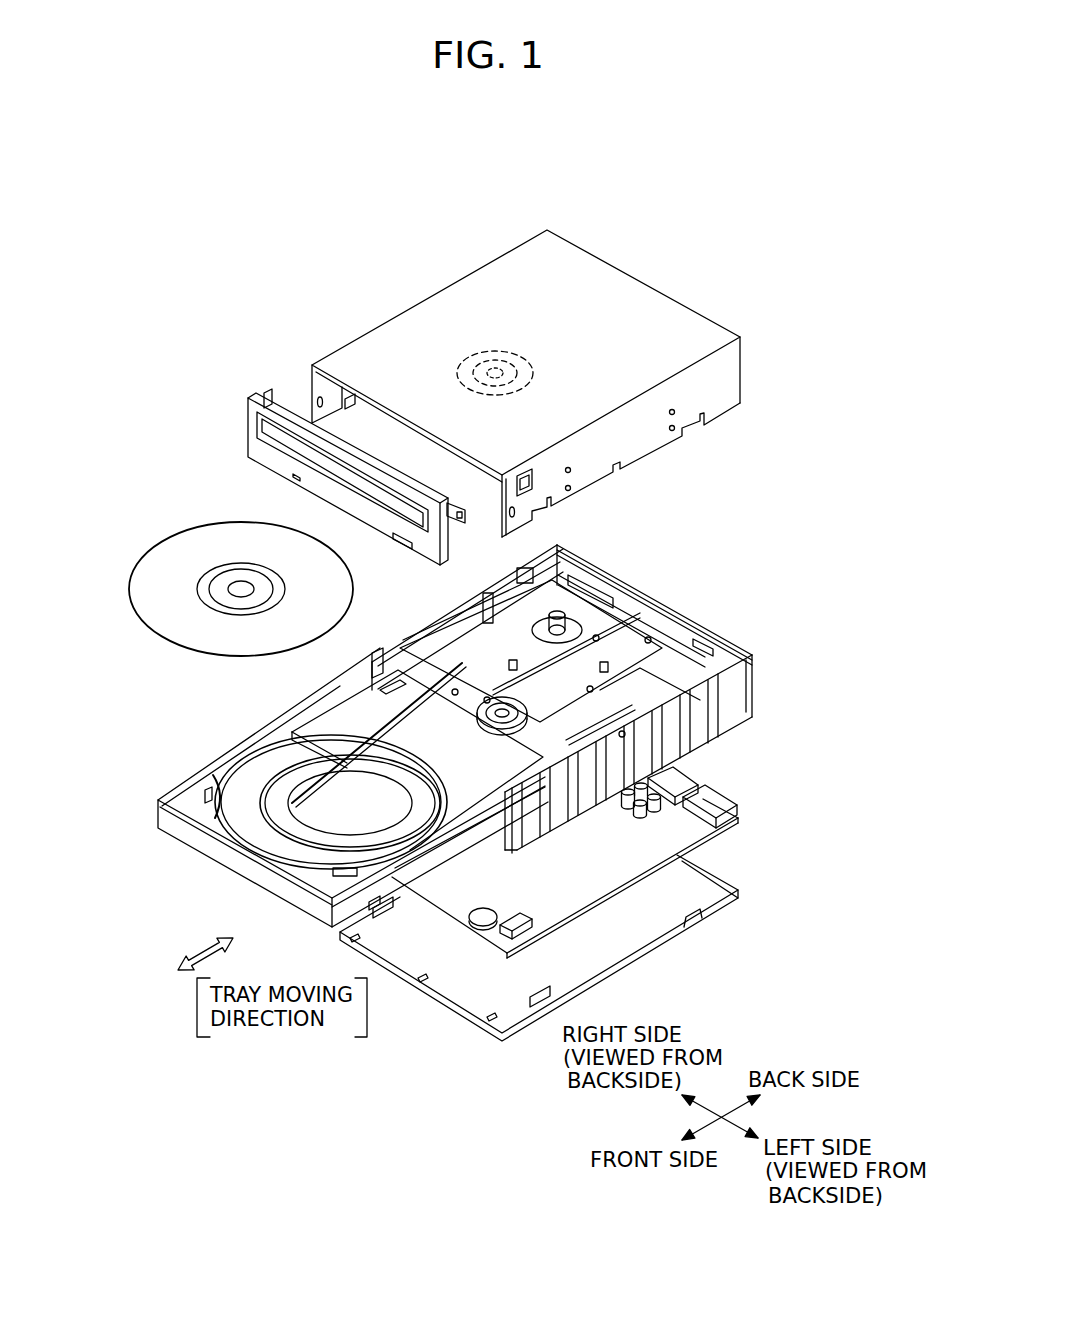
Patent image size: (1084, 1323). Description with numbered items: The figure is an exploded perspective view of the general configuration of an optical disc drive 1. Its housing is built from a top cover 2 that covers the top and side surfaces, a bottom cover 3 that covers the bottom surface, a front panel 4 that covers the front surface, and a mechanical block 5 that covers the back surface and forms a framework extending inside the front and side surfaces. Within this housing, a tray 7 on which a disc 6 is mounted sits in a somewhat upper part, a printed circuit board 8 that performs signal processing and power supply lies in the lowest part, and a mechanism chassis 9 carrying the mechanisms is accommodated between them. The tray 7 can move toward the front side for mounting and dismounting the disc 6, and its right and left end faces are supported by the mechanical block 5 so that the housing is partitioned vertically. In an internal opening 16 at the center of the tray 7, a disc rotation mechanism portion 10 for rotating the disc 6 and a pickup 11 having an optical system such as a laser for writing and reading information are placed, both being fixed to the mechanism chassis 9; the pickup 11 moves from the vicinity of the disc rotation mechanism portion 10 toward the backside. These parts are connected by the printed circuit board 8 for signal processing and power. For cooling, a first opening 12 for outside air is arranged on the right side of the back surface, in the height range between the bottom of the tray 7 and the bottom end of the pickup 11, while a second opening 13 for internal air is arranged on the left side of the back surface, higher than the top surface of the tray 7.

The optical disc drive 1 is at (396, 219).
The top cover 2 is at (658, 313).
The bottom cover 3 is at (623, 938).
The front panel 4 is at (247, 450).
The mechanical block 5 is at (648, 728).
The disc 6 is at (177, 560).
The tray 7 is at (200, 802).
The printed circuit board 8 is at (663, 827).
The mechanism chassis 9 is at (552, 575).
The disc rotation mechanism portion 10 is at (518, 650).
The pickup 11 is at (637, 640).
The first opening 12 is at (590, 587).
The second opening 13 is at (710, 652).
The internal opening 16 is at (345, 762).